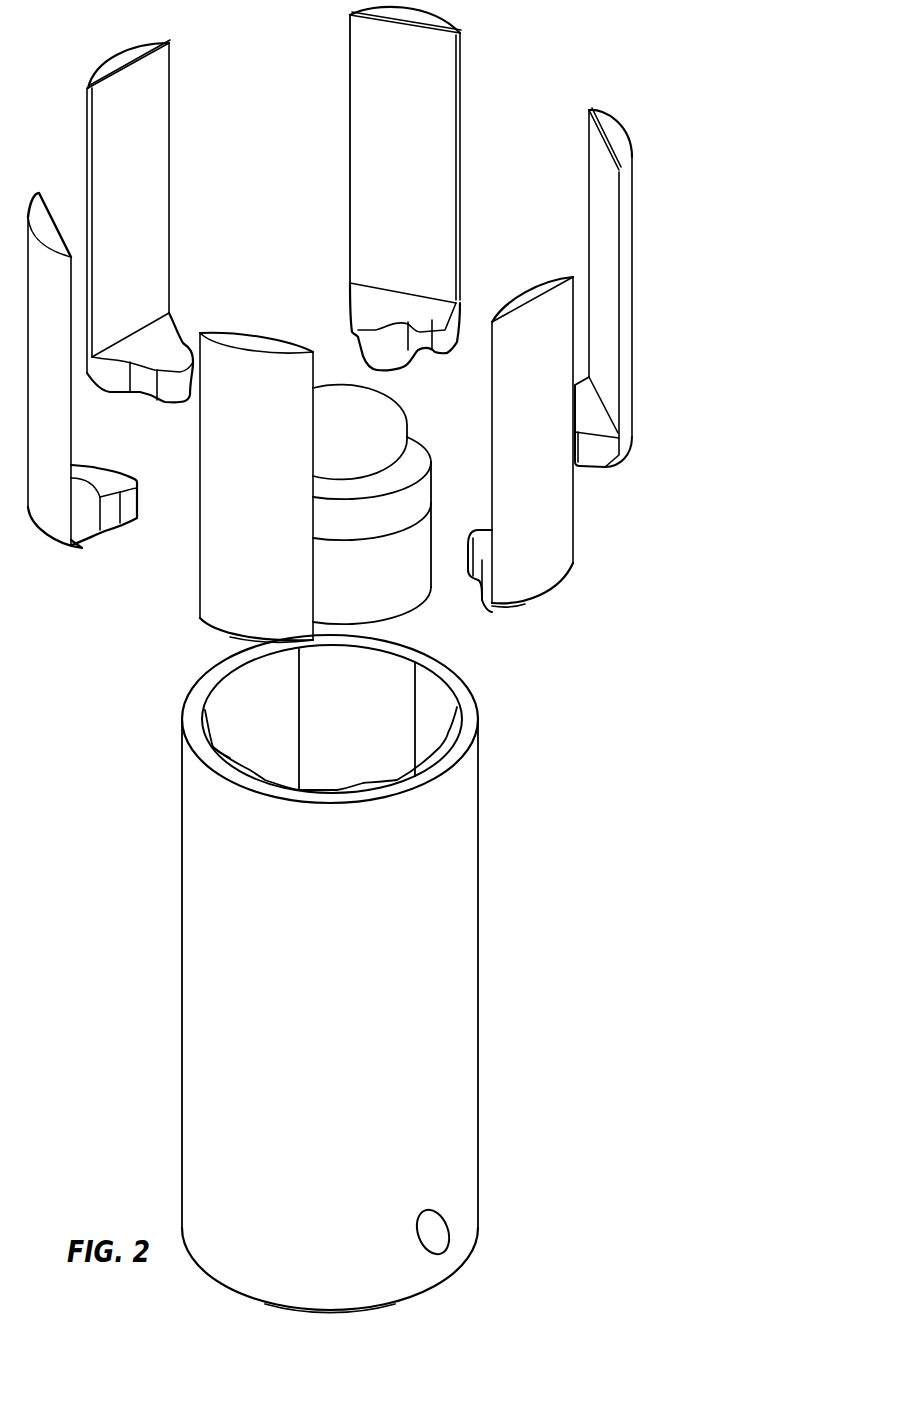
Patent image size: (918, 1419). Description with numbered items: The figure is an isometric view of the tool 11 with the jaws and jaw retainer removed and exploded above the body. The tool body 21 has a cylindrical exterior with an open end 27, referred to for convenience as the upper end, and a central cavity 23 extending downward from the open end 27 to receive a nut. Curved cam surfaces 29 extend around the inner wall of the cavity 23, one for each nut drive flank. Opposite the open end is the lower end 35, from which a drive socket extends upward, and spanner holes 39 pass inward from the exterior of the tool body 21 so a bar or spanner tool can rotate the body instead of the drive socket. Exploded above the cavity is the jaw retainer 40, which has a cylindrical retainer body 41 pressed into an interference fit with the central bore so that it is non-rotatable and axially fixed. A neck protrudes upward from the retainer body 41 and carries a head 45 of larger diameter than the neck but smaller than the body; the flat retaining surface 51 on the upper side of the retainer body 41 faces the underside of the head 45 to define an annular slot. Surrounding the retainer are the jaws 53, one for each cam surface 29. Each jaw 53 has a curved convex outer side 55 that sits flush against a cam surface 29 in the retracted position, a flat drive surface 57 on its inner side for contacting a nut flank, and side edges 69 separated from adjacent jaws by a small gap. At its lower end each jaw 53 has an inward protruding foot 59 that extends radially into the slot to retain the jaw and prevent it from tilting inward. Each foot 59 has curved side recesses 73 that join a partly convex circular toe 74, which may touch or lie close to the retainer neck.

The tool 11 is at (374, 974).
The tool body 21 is at (443, 995).
The central cavity 23 is at (378, 708).
The open end 27 is at (462, 735).
The cam surfaces 29 is at (247, 703).
The lower end 35 is at (445, 1278).
The spanner holes 39 is at (437, 1228).
The jaw retainer 40 is at (430, 507).
The retainer body 41 is at (405, 598).
The head 45 is at (367, 422).
The retaining surface 51 is at (404, 490).
The jaws 53 is at (636, 188).
The outer side 55 is at (235, 585).
The drive surface 57 is at (398, 189).
The foot 59 is at (382, 322).
The side edge 69 is at (349, 63).
The side recess 73 is at (97, 470).
The toe 74 is at (135, 475).